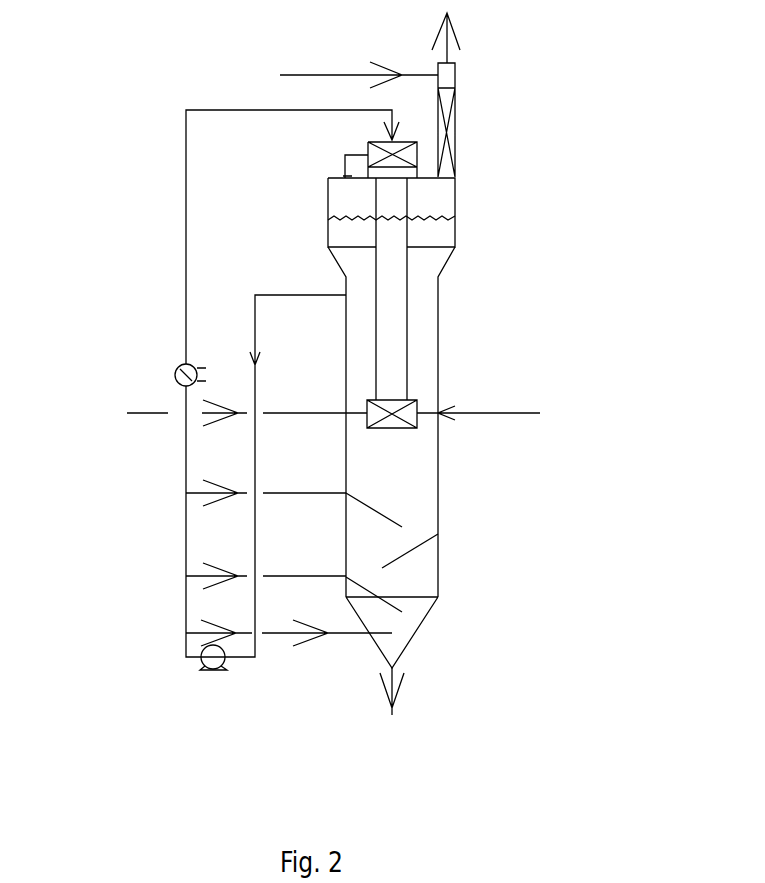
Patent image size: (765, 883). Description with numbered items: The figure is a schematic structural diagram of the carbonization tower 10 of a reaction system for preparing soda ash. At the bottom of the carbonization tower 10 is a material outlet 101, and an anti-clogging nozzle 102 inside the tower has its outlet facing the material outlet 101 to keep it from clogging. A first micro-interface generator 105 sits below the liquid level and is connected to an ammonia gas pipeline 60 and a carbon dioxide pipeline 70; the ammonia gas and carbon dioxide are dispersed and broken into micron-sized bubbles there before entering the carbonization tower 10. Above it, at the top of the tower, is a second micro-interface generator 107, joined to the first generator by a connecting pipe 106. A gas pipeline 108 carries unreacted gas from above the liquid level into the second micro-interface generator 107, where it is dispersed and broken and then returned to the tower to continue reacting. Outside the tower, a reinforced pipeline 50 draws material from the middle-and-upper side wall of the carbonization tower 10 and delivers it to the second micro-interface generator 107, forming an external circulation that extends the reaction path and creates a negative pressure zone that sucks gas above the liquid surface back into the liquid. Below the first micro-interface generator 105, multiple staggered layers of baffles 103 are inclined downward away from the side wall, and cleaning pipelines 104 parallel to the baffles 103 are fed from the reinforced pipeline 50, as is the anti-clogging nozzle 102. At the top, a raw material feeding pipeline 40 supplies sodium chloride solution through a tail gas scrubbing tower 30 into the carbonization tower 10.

The carbonization tower 10 is at (422, 478).
The material outlet 101 is at (392, 668).
The anti-clogging nozzle 102 is at (393, 637).
The baffles 103 is at (515, 597).
The cleaning pipelines 104 is at (513, 553).
The first micro-interface generator 105 is at (417, 428).
The connecting pipe 106 is at (393, 363).
The second micro-interface generator 107 is at (368, 142).
The gas pipeline 108 is at (350, 158).
The tail gas scrubbing tower 30 is at (453, 100).
The raw material feeding pipeline 40 is at (337, 75).
The reinforced pipeline 50 is at (185, 280).
The ammonia gas pipeline 60 is at (147, 413).
The carbon dioxide pipeline 70 is at (480, 413).